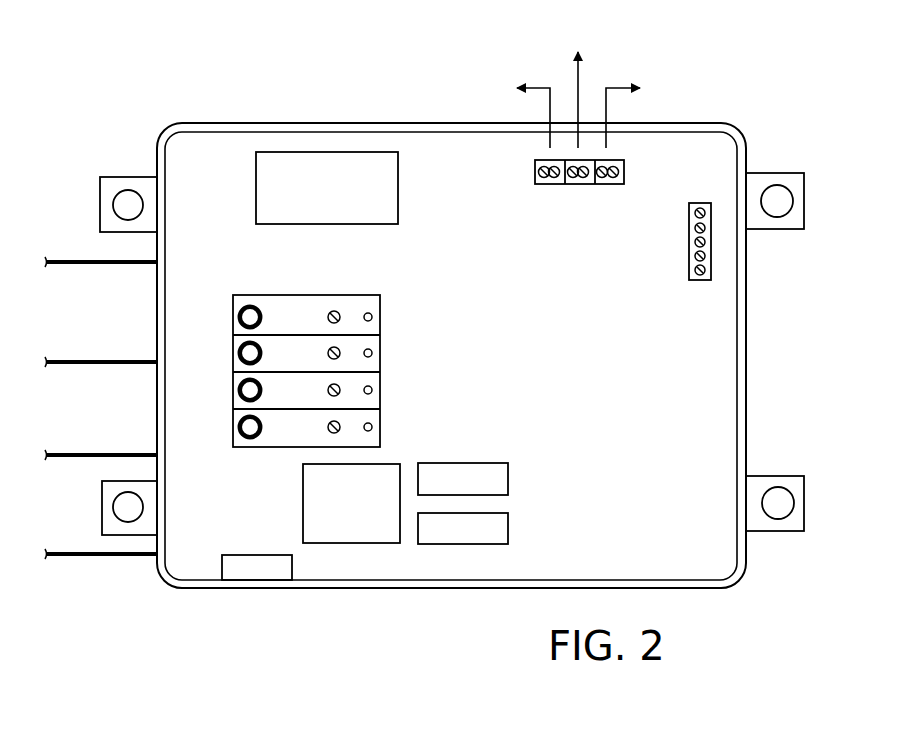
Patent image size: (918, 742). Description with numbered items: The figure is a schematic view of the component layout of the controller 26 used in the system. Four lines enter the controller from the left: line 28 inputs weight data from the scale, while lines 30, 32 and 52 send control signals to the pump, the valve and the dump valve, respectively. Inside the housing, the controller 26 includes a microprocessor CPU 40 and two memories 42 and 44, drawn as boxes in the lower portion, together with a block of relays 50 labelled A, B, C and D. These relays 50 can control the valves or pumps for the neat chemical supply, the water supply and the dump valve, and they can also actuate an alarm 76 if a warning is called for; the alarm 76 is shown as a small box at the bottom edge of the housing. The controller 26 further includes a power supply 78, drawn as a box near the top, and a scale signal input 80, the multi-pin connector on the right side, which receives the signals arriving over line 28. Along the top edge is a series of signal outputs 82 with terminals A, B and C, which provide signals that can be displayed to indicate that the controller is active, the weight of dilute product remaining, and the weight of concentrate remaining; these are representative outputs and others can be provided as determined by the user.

The controller 26 is at (408, 618).
The line 28 is at (78, 548).
The line 30 is at (78, 356).
The line 32 is at (78, 256).
The line 52 is at (78, 449).
The microprocessor CPU 40 is at (305, 500).
The memory 42 is at (506, 531).
The memory 44 is at (506, 483).
The relays 50 is at (305, 292).
The alarm 76 is at (258, 572).
The power supply 78 is at (316, 152).
The scale signal input 80 is at (689, 257).
The signal outputs 82 is at (575, 185).